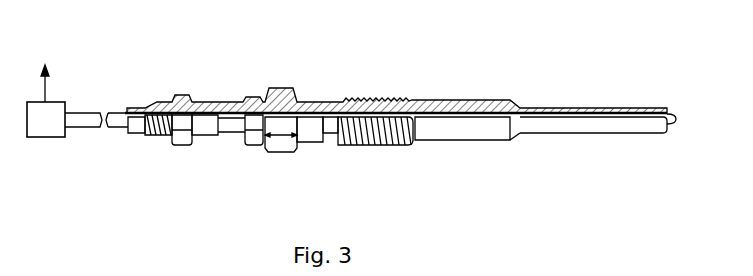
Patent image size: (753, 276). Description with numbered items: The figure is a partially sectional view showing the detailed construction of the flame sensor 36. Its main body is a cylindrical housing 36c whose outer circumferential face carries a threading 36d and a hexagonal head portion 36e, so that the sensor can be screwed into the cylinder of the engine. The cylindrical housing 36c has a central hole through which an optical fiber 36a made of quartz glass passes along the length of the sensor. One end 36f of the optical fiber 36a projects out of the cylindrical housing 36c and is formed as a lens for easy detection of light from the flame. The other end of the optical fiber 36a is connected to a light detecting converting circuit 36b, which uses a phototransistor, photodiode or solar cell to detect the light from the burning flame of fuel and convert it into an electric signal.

The flame sensor 36 is at (417, 82).
The optical fiber 36a is at (117, 128).
The light detecting converting circuit 36b is at (62, 102).
The cylindrical housing 36c is at (485, 141).
The threading 36d is at (380, 147).
The hexagonal head portion 36e is at (292, 152).
The end of optical fiber 36f is at (676, 119).